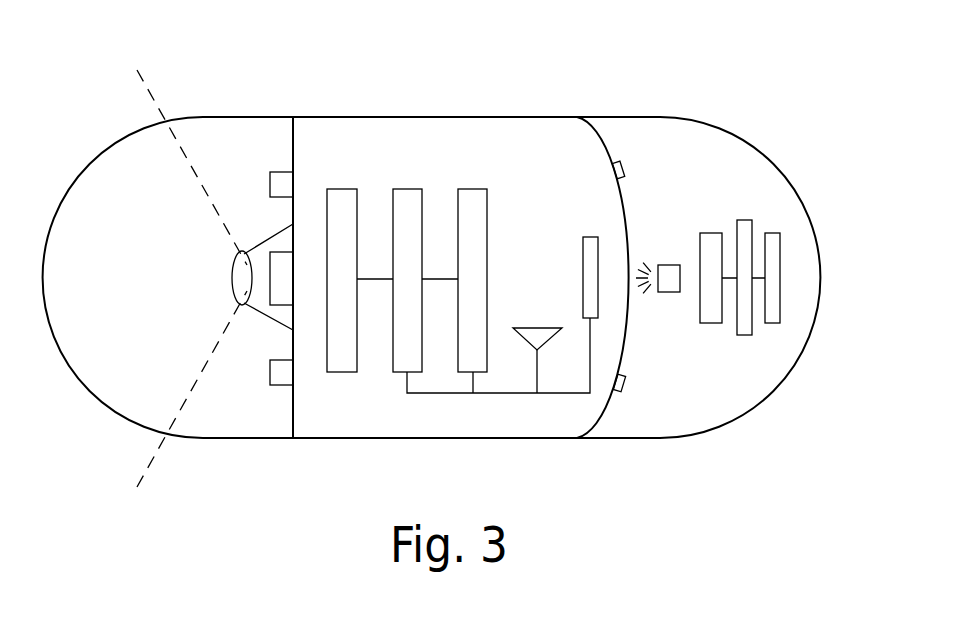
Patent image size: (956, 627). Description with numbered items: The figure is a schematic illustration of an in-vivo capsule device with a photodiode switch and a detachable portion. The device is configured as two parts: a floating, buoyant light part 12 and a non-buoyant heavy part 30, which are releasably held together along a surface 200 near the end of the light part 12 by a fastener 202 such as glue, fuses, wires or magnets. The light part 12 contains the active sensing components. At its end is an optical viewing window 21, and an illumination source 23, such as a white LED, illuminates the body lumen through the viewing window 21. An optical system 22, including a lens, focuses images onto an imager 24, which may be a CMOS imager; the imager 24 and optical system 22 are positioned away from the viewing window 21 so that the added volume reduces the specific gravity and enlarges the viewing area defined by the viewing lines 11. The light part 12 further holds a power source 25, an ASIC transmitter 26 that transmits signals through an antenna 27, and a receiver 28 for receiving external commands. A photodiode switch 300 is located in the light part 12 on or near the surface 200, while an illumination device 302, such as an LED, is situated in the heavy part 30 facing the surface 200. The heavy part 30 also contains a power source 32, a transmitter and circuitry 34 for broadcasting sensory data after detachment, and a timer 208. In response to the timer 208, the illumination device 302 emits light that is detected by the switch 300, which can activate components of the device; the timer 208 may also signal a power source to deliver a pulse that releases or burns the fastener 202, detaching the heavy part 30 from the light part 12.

The viewing lines 11 is at (158, 453).
The light part 12 is at (404, 117).
The viewing window 21 is at (76, 180).
The optical system 22 is at (233, 266).
The illumination source 23 is at (270, 373).
The imager 24 is at (293, 262).
The power source 25 is at (340, 372).
The ASIC transmitter 26 is at (473, 189).
The antenna 27 is at (537, 328).
The receiver 28 is at (408, 189).
The heavy part 30 is at (738, 138).
The power source 32 is at (712, 233).
The transmitter and circuitry 34 is at (744, 335).
The surface 200 is at (607, 137).
The fastener 202 is at (658, 466).
The timer 208 is at (781, 302).
The switch 300 is at (593, 237).
The illumination device 302 is at (672, 265).